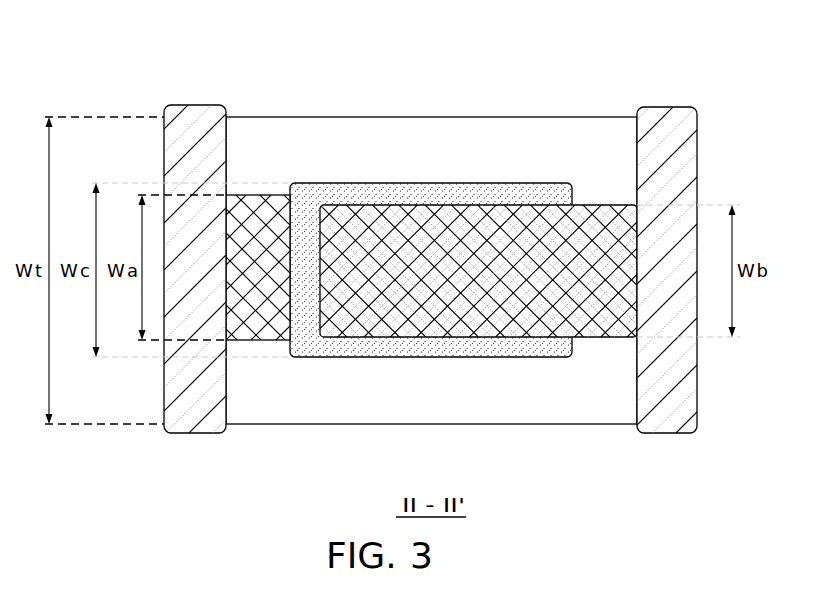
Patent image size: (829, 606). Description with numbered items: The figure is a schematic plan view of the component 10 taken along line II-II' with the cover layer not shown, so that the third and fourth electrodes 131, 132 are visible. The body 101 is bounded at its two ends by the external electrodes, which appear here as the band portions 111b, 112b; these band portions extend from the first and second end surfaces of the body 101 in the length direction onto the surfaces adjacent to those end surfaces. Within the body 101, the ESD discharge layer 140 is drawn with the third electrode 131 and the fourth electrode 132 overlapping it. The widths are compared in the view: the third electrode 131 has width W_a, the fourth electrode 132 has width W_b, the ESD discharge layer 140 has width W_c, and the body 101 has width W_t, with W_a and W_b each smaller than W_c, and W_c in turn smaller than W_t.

The multilayer capacitor 10 is at (447, 25).
The body 101 is at (498, 112).
The band portion 111b is at (196, 402).
The band portion 112b is at (675, 407).
The third electrode 131 is at (261, 320).
The fourth electrode 132 is at (590, 312).
The ESD discharge layer 140 is at (312, 345).